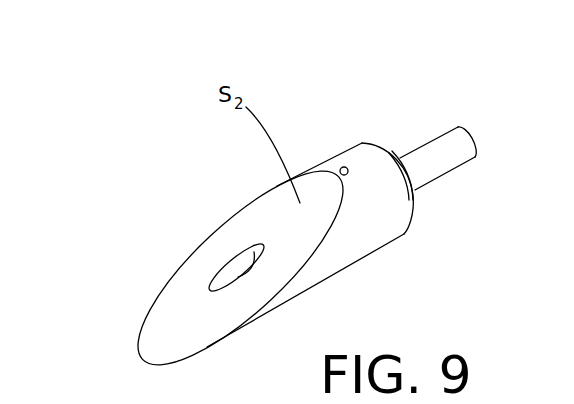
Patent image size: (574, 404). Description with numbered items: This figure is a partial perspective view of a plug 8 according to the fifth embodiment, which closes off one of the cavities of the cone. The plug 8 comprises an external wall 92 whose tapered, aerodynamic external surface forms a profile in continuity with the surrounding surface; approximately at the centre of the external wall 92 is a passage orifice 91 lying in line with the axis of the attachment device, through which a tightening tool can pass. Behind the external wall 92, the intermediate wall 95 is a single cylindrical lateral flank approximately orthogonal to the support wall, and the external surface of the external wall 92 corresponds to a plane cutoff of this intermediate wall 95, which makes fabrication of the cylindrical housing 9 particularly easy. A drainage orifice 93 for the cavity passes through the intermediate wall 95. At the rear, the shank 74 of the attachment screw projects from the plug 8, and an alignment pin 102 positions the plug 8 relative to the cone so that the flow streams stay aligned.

The plug 8 is at (228, 137).
The housing 9 is at (160, 299).
The passage orifice 91 is at (230, 263).
The external wall 92 is at (155, 337).
The drainage orifice 93 is at (344, 166).
The intermediate wall / cylindrical lateral flank 95 is at (373, 232).
The alignment pin 102 is at (395, 150).
The shank 74 is at (457, 155).